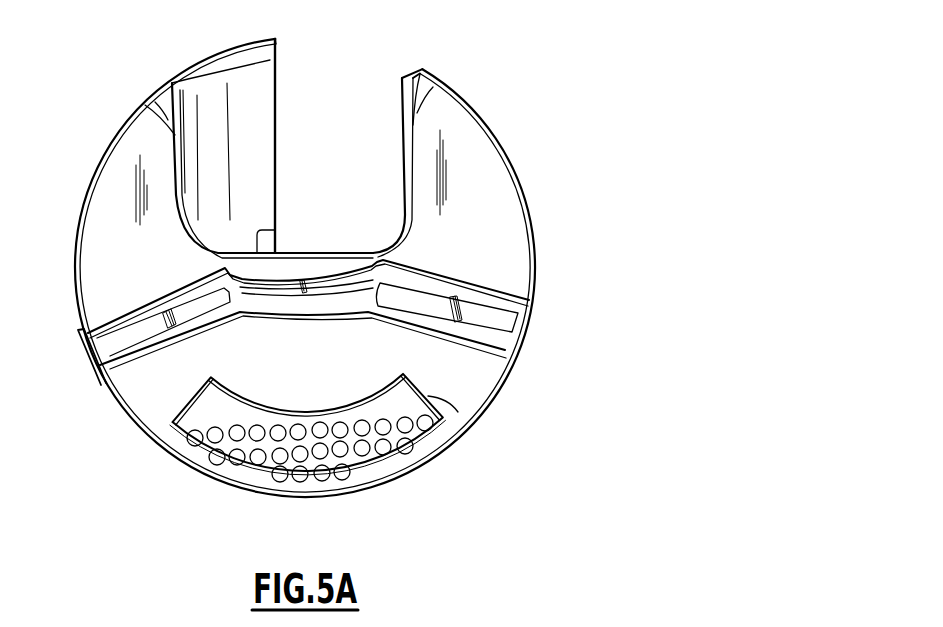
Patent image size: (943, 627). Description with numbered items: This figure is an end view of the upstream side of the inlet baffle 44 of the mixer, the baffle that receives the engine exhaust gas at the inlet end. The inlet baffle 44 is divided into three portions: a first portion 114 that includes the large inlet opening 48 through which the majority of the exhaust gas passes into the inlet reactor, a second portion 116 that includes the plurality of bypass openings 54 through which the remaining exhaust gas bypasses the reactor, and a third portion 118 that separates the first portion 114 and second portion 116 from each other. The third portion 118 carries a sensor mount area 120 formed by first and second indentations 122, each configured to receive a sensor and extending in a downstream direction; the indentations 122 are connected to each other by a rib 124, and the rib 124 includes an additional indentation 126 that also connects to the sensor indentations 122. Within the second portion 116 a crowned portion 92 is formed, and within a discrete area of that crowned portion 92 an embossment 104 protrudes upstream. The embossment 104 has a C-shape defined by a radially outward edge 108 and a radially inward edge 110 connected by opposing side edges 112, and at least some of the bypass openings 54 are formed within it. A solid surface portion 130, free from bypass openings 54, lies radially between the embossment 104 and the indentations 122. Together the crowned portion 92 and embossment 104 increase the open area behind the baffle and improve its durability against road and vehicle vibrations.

The inlet baffle 44 is at (530, 58).
The large inlet opening 48 is at (275, 157).
The bypass openings 54 is at (300, 480).
The crowned portion 92 is at (470, 373).
The embossment 104 is at (392, 410).
The radially outward edge 108 is at (440, 422).
The radially inward edge 110 is at (347, 407).
The side edges 112 is at (458, 412).
The first portion 114 is at (452, 168).
The second portion 116 is at (164, 404).
The third portion 118 is at (477, 290).
The sensor mount area 120 is at (218, 336).
The indentations 122 is at (102, 353).
The rib 124 is at (290, 277).
The additional indentation 126 is at (340, 287).
The solid surface portion 130 is at (260, 388).